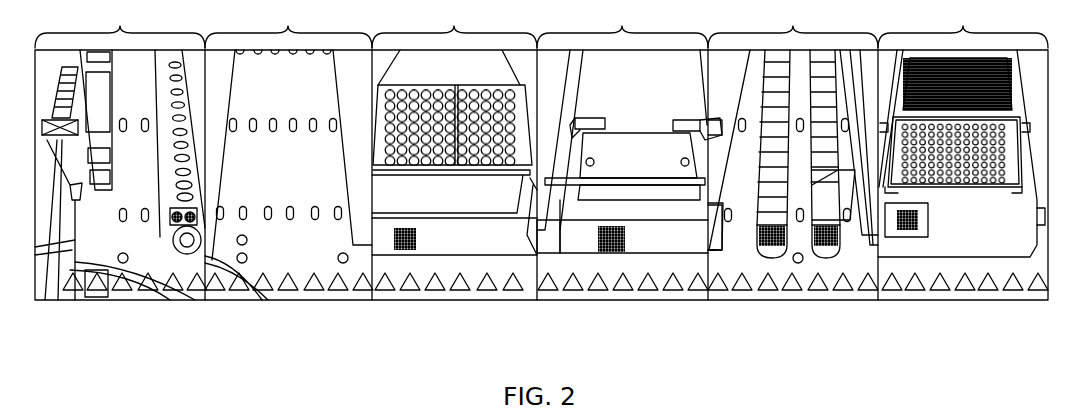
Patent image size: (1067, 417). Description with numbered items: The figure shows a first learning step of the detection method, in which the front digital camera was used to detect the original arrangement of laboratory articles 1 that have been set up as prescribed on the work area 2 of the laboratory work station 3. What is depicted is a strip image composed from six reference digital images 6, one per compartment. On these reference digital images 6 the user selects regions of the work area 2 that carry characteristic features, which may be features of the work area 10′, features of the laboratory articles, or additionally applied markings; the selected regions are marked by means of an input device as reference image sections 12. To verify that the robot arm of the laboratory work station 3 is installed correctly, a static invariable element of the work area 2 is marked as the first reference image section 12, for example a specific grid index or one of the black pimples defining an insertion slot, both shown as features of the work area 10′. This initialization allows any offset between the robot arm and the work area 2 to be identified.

The laboratory articles 1 is at (60, 150).
The work area 2 is at (255, 250).
The laboratory work station 3 is at (300, 302).
The reference digital image 6 is at (541, 24).
The features of the work area 10′ is at (290, 228).
The reference image section 12 is at (72, 200).